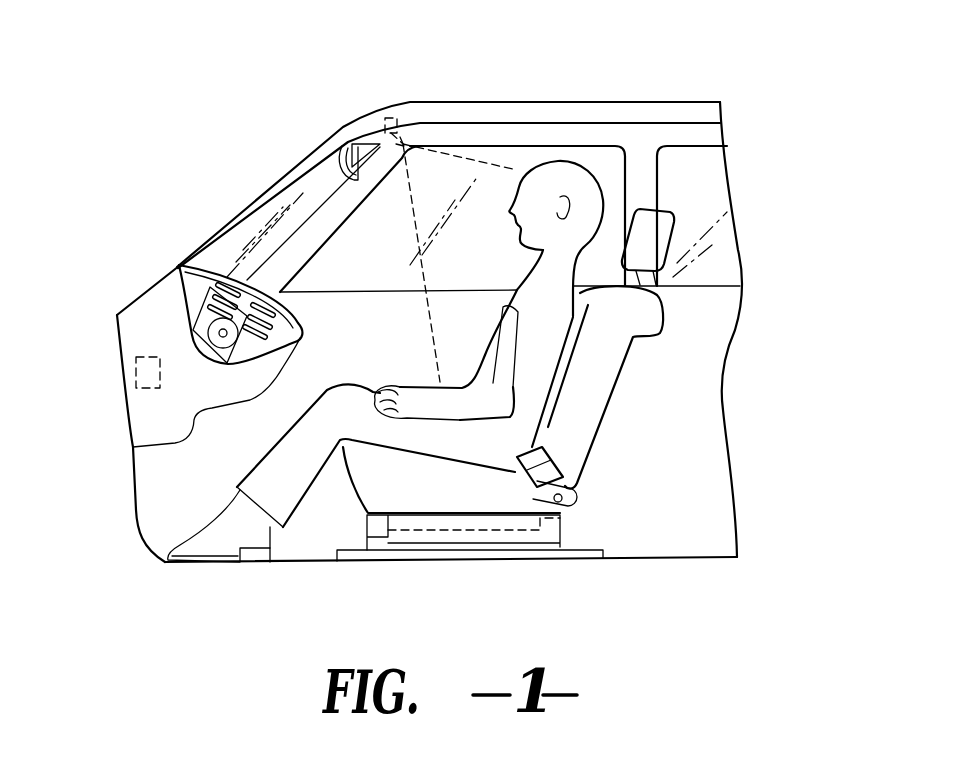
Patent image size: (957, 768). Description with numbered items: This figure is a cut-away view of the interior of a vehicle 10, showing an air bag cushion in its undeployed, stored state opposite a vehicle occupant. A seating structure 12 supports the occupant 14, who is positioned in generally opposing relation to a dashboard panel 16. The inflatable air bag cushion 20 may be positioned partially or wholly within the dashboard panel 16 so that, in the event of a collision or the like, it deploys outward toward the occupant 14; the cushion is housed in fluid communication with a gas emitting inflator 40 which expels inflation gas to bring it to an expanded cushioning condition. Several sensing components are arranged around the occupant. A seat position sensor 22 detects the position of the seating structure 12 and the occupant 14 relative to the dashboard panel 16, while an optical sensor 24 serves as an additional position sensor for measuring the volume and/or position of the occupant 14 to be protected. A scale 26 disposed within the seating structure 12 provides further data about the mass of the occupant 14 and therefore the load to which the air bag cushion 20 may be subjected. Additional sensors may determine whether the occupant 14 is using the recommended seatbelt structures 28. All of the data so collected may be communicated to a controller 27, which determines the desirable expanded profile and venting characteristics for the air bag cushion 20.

The vehicle 10 is at (766, 95).
The seating structure 12 is at (623, 375).
The occupant 14 is at (558, 161).
The dashboard panel 16 is at (135, 328).
The inflatable air bag cushion 20 is at (180, 273).
The seat position sensor 22 is at (353, 518).
The optical sensor 24 is at (386, 118).
The scale 26 is at (567, 517).
The controller 27 is at (140, 376).
The seatbelt structures 28 is at (547, 438).
The gas emitting inflator 40 is at (203, 328).